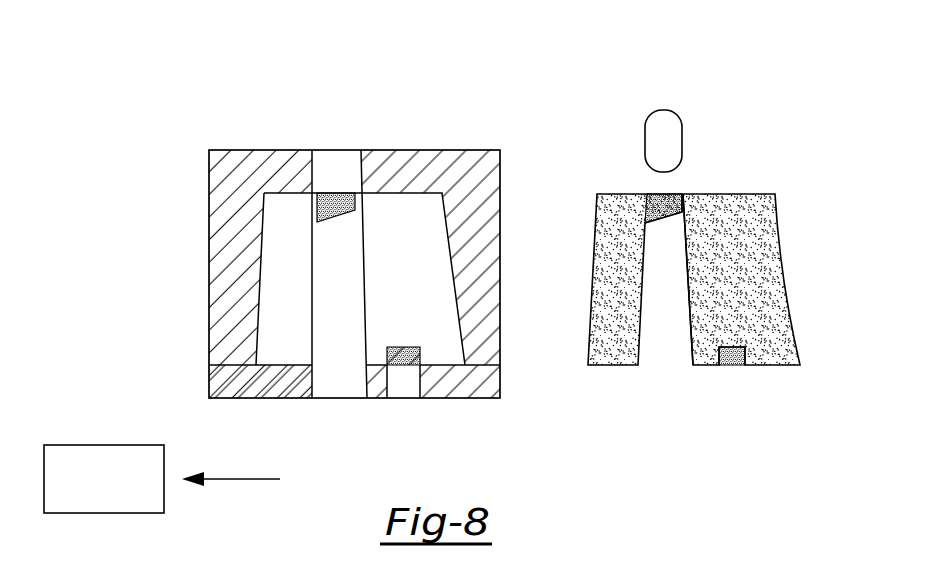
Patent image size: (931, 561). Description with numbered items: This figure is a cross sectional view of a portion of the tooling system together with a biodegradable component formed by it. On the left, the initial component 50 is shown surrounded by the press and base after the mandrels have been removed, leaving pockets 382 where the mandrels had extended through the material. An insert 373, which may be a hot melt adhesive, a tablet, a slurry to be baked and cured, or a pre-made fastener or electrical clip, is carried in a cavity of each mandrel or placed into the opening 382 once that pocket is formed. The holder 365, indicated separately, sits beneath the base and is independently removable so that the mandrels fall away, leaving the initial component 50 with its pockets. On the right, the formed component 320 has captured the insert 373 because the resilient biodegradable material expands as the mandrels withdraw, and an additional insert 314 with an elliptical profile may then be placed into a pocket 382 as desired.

The initial component 50 is at (442, 235).
The insert 373 is at (404, 352).
The pocket 382 is at (367, 354).
The formed component 320 is at (783, 173).
The additional insert 314 is at (683, 140).
The holder 365 is at (120, 492).